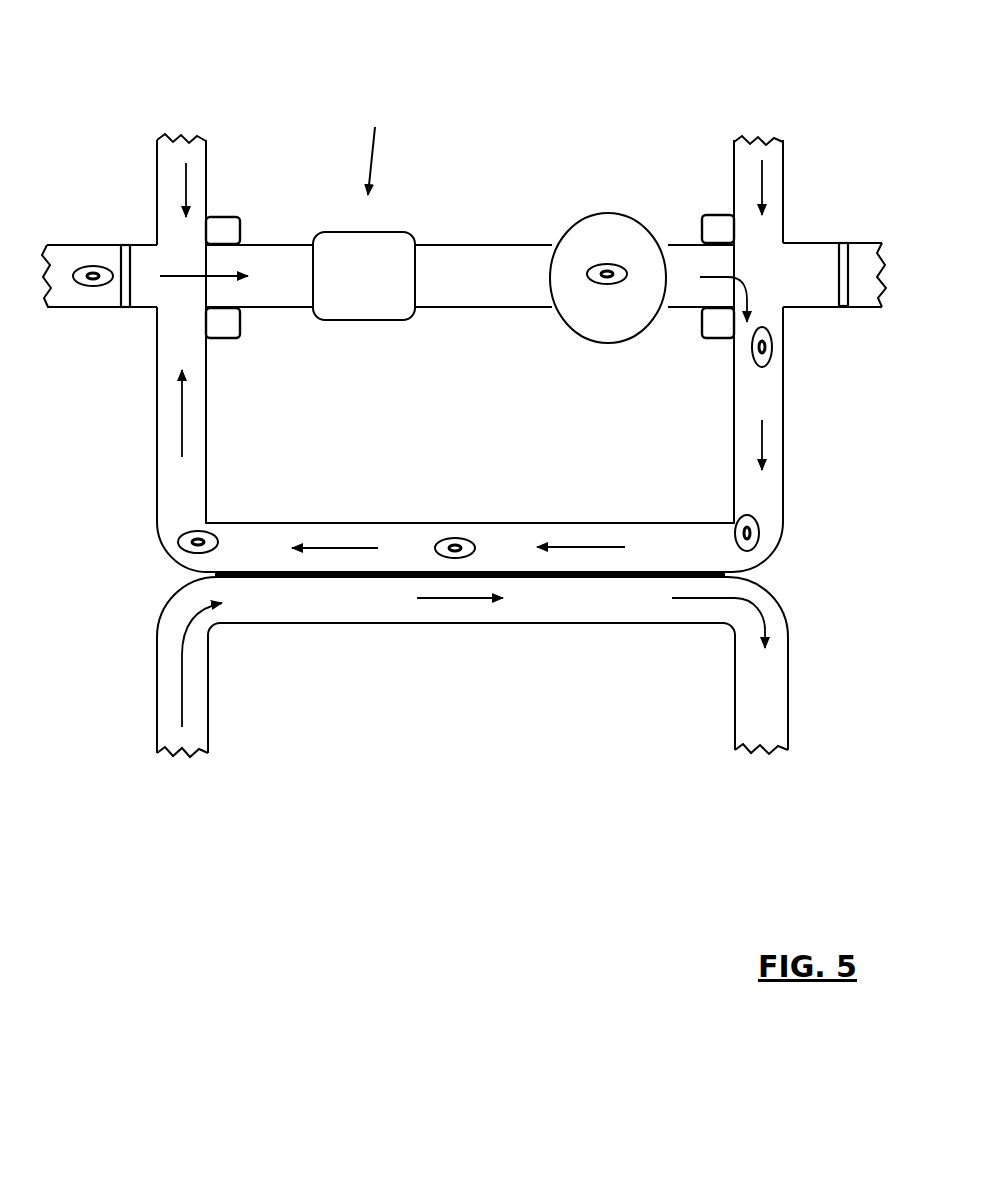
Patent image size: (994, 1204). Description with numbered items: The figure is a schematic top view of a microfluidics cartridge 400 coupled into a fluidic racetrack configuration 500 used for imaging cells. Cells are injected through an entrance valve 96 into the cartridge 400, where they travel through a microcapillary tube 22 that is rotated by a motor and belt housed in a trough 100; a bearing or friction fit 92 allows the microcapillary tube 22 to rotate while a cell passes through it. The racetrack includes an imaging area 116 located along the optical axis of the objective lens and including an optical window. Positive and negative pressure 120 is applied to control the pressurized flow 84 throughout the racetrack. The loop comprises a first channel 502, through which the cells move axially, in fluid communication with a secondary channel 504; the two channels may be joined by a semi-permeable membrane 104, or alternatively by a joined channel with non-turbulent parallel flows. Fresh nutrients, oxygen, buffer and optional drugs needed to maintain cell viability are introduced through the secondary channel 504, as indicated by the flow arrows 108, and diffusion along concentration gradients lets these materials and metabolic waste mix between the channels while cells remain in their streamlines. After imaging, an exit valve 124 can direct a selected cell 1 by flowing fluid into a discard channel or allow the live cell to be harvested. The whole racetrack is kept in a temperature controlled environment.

The selected cell 1 is at (100, 283).
The microcapillary tube 22 is at (470, 276).
The pressurized flow 84 is at (187, 274).
The bearing or friction fit 92 is at (240, 217).
The entrance valve 96 is at (122, 245).
The trough 100 is at (362, 232).
The semi-permeable membrane 104 is at (393, 577).
The flow arrows 108 is at (183, 673).
The imaging area 116 is at (570, 228).
The positive and negative pressure 120 is at (186, 165).
The exit valve 124 is at (847, 246).
The microfluidics cartridge 400 is at (367, 146).
The fluidic racetrack configuration 500 is at (473, 409).
The first channel 502 is at (382, 523).
The secondary channel 504 is at (472, 678).